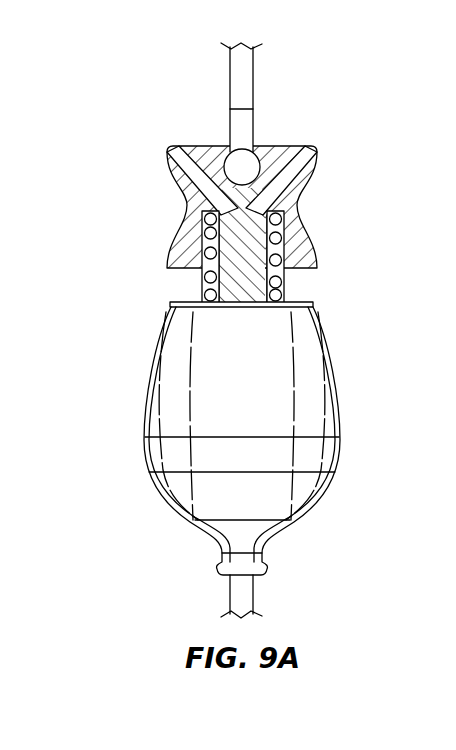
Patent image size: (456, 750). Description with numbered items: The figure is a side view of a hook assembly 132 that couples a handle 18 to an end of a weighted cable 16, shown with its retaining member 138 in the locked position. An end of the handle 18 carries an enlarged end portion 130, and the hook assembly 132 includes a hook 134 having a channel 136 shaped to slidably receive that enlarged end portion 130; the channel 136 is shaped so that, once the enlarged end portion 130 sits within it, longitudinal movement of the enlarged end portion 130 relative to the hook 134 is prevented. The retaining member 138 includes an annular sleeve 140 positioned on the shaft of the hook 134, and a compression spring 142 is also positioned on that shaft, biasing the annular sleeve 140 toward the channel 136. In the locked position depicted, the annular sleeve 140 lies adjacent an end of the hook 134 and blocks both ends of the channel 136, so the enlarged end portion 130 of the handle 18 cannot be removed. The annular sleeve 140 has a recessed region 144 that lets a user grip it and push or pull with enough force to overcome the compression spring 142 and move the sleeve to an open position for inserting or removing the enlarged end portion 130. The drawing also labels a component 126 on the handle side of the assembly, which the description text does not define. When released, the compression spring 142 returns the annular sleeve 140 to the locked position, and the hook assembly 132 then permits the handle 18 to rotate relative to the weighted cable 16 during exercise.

The weighted cable 16 is at (254, 595).
The handle 18 is at (264, 87).
The bulb 126 is at (308, 408).
The enlarged end portion 130 is at (272, 147).
The hook assembly 132 is at (99, 166).
The hook 134 is at (219, 207).
The channel 136 is at (231, 153).
The retaining member 138 is at (304, 205).
The annular sleeve 140 is at (172, 158).
The compression spring 142 is at (198, 260).
The recessed region 144 is at (177, 218).